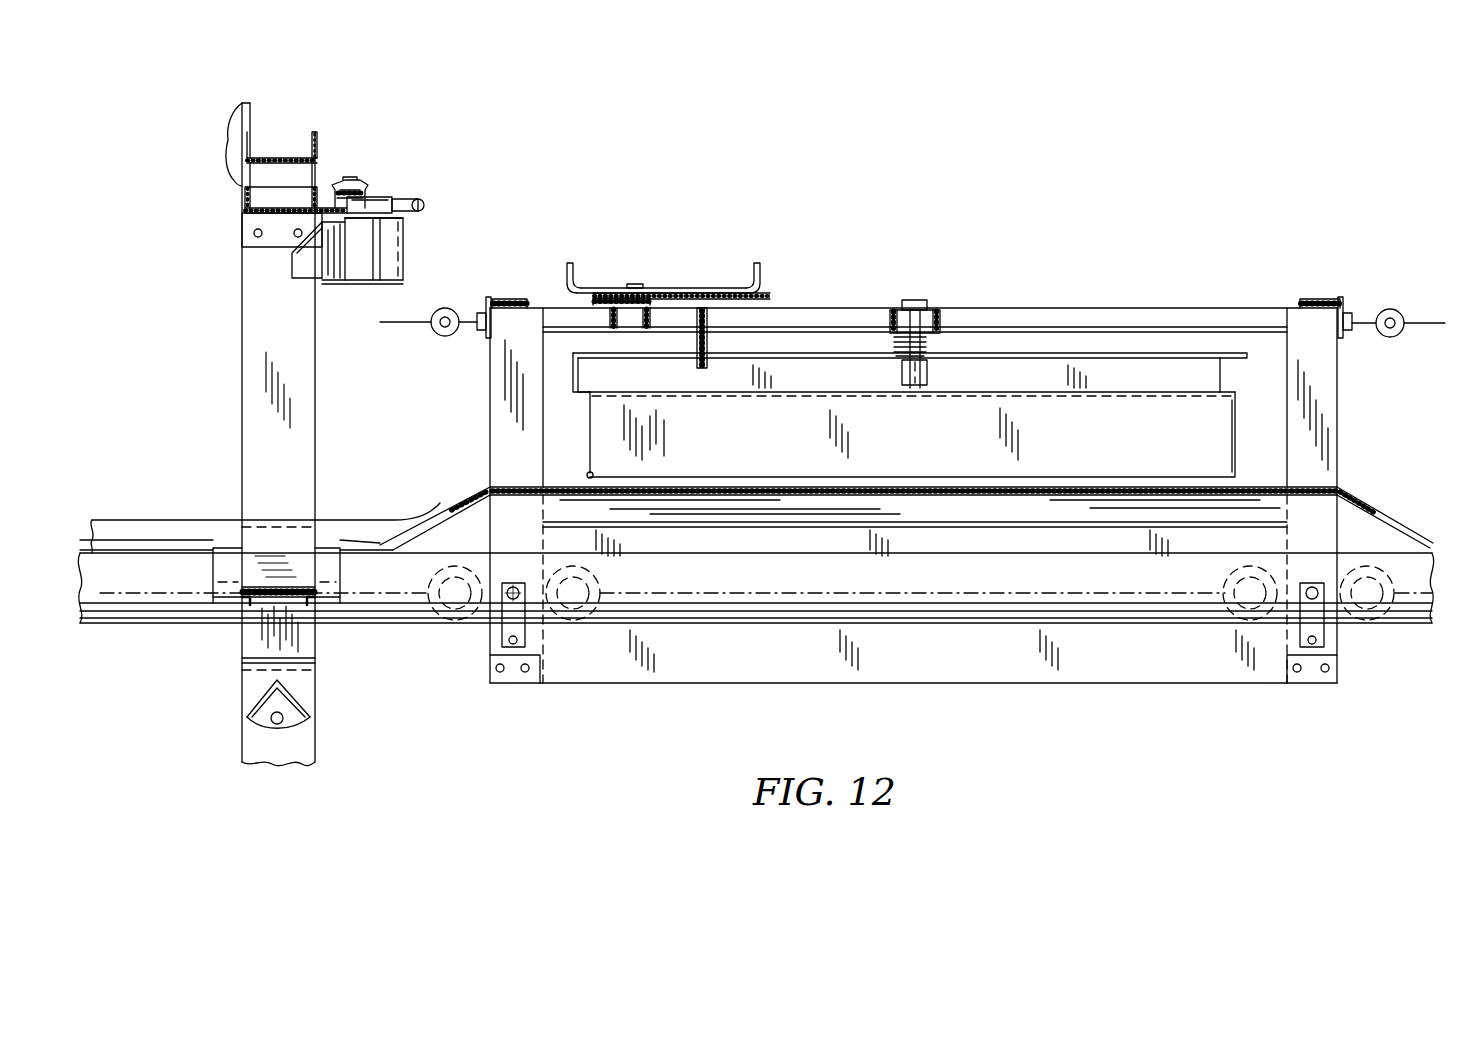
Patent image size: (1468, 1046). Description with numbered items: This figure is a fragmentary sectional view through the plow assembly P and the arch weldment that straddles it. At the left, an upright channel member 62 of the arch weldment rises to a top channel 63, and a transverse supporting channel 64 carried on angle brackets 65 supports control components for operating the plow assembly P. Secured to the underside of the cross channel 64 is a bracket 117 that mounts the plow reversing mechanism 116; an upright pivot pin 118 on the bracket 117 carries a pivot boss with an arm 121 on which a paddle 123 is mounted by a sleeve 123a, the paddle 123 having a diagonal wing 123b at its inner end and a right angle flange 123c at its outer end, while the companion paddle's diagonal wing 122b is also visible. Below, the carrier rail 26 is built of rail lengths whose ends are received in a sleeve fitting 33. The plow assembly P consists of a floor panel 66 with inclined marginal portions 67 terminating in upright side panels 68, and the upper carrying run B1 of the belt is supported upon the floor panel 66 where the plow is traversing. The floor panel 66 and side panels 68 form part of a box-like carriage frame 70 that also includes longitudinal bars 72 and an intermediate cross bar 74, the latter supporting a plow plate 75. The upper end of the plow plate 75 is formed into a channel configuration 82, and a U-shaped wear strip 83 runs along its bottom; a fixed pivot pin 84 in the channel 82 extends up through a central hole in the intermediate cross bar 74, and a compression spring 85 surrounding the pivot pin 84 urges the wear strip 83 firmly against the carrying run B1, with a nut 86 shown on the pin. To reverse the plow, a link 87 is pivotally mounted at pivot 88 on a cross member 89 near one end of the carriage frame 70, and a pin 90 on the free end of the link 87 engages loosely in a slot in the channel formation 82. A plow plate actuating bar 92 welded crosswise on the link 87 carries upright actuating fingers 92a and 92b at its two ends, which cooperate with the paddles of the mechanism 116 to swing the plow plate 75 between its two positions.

The carrier rail 26 is at (135, 625).
The fitting 33 is at (225, 630).
The upright channel member 62 is at (240, 380).
The top channel 63 is at (283, 158).
The transverse supporting channel 64 is at (245, 200).
The angle bracket 65 is at (252, 237).
The floor panel 66 is at (945, 493).
The inclined marginal portion 67 is at (515, 514).
The upright side panel 68 is at (737, 683).
The carriage frame 70 is at (482, 398).
The longitudinal bar 72 is at (1010, 280).
The intermediate cross bar 74 is at (897, 308).
The plow plate 75 is at (1224, 443).
The channel configuration 82 is at (1210, 375).
The wear strip 83 is at (1047, 470).
The fixed pivot pin 84 is at (918, 300).
The compression spring 85 is at (928, 343).
The lower nut 86 is at (893, 333).
The link 87 is at (768, 295).
The pivot 88 is at (634, 283).
The cross member 89 is at (610, 328).
The pin 90 is at (708, 335).
The plow plate actuating bar 92 is at (669, 246).
The upright actuating finger 92a is at (568, 262).
The upright actuating finger 92b is at (762, 263).
The plow reversing mechanism 116 is at (383, 167).
The bracket 117 is at (247, 213).
The upright pivot pin 118 is at (338, 178).
The arm 121 is at (422, 205).
The diagonal wing 122b is at (303, 280).
The paddle 123 is at (370, 247).
The sleeve 123a is at (383, 195).
The diagonal wing 123b is at (327, 280).
The right angle flange 123c is at (395, 279).
The plow assembly P is at (1116, 299).
The upper carrying run B1 is at (1432, 546).